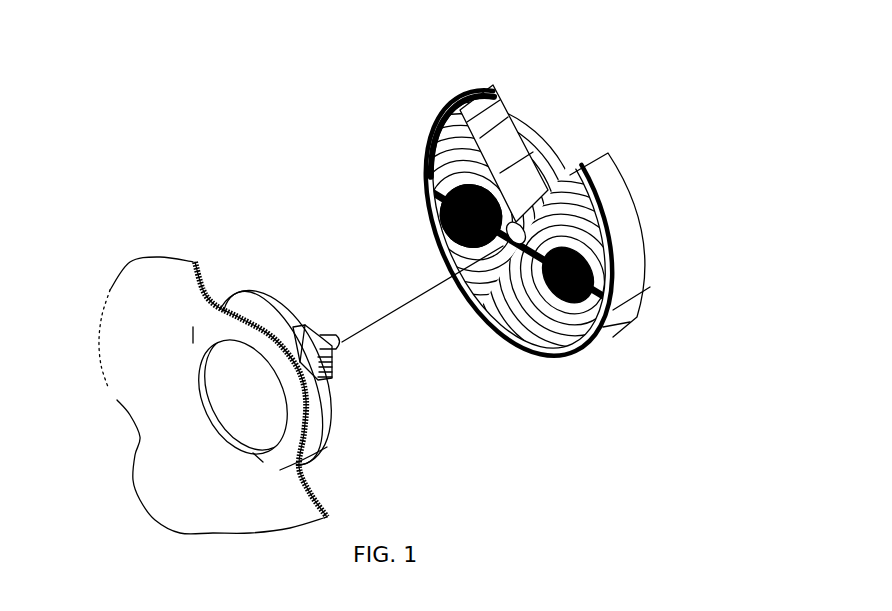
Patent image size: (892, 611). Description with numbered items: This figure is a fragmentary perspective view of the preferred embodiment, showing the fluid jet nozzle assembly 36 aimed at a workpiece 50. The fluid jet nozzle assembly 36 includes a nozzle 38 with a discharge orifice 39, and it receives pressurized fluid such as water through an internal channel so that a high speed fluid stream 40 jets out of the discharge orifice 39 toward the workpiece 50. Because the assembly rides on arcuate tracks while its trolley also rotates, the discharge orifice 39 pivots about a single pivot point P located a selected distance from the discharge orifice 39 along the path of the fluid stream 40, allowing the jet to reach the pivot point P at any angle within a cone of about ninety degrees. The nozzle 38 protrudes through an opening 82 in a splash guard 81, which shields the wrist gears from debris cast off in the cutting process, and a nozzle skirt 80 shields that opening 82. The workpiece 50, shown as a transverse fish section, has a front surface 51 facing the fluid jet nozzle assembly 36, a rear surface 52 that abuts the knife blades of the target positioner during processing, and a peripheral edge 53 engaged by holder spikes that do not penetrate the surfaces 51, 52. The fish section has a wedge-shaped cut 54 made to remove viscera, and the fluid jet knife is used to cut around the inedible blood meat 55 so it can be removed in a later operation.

The fluid jet nozzle assembly 36 is at (282, 289).
The nozzle 38 is at (323, 340).
The discharge orifice 39 is at (340, 340).
The fluid stream 40 is at (402, 306).
The workpiece 50 is at (470, 108).
The front surface 51 is at (450, 152).
The rear surface 52 is at (510, 125).
The peripheral edge 53 is at (632, 243).
The wedge-shaped cut 54 is at (515, 231).
The blood meat 55 is at (432, 188).
The nozzle skirt 80 is at (320, 430).
The splash guard 81 is at (153, 482).
The opening 82 is at (240, 392).
The pivot point P is at (498, 313).